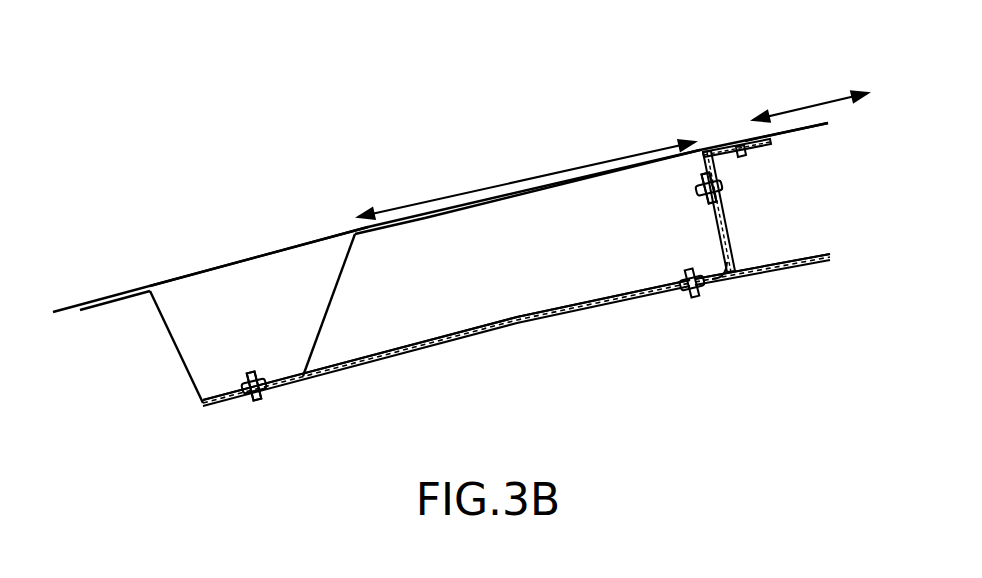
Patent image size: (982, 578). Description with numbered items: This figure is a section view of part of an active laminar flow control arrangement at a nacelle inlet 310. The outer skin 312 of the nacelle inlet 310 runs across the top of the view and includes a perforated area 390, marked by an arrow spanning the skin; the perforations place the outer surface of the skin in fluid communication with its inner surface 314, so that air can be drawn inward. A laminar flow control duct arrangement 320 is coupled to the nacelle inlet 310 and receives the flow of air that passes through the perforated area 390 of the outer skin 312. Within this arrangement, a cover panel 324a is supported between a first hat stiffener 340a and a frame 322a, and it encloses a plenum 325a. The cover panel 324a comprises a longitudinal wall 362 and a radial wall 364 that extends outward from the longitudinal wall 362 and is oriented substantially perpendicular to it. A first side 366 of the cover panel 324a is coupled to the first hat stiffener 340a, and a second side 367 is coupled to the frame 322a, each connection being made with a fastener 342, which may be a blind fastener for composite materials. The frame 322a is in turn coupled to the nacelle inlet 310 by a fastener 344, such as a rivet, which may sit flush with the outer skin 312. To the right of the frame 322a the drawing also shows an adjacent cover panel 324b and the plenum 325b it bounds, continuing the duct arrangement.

The nacelle inlet 310 is at (176, 278).
The outer skin 312 is at (330, 236).
The inner surface 314 is at (277, 253).
The laminar flow control duct arrangement 320 is at (752, 357).
The frame 322a is at (710, 147).
The cover panel 324a is at (560, 315).
The lower panel 324b is at (785, 272).
The plenum 325a is at (562, 213).
The honeycomb core area 325b is at (786, 181).
The first hat stiffener 340a is at (178, 340).
The fastener 342 is at (258, 400).
The fastener 344 is at (742, 140).
The longitudinal wall 362 is at (452, 341).
The radial wall 364 is at (720, 223).
The first side 366 is at (180, 412).
The second side 367 is at (768, 184).
The perforated area 390 is at (655, 148).